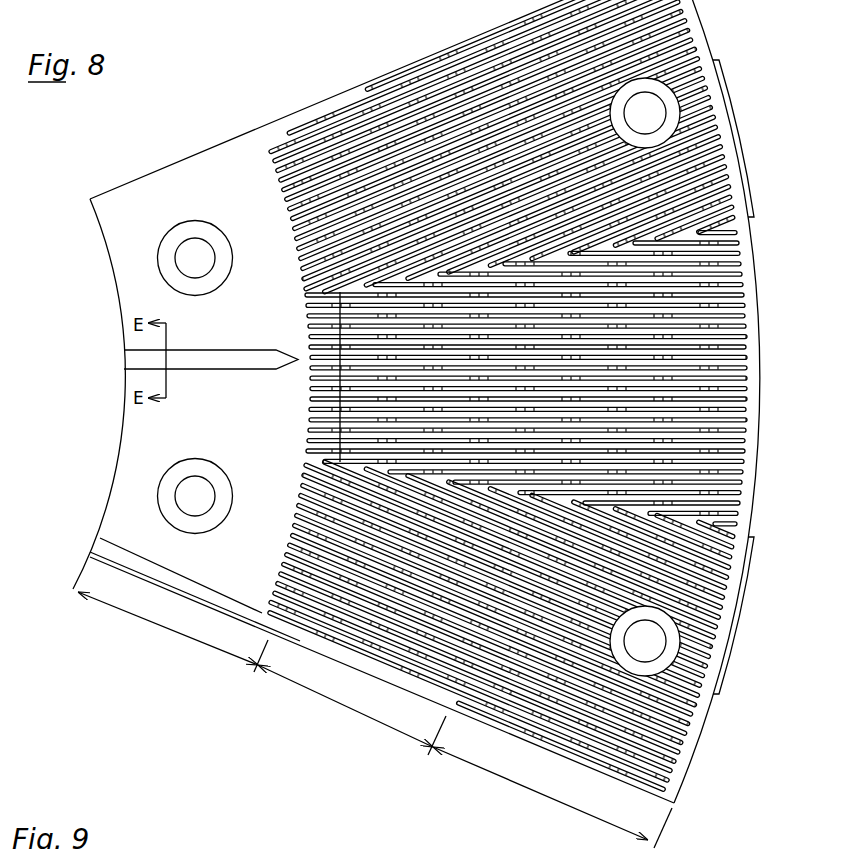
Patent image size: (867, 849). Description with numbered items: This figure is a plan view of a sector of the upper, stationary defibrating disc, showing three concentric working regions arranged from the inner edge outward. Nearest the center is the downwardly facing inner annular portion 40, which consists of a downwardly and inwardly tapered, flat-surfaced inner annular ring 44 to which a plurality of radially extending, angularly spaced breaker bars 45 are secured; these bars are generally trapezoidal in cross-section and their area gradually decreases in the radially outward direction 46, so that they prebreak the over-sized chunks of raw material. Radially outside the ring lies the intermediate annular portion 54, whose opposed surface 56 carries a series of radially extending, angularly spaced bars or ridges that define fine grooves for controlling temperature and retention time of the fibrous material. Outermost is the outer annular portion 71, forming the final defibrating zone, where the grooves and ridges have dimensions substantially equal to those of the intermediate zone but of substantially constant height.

The opposed surface of the upper disc 56 is at (440, 62).
The breaker bars 45 is at (236, 357).
The radially outward direction 46 is at (250, 390).
The inner annular ring 44 is at (270, 614).
The inner annular portion 40 is at (173, 632).
The intermediate annular portion 54 is at (352, 710).
The outer annular portion 71 is at (552, 797).